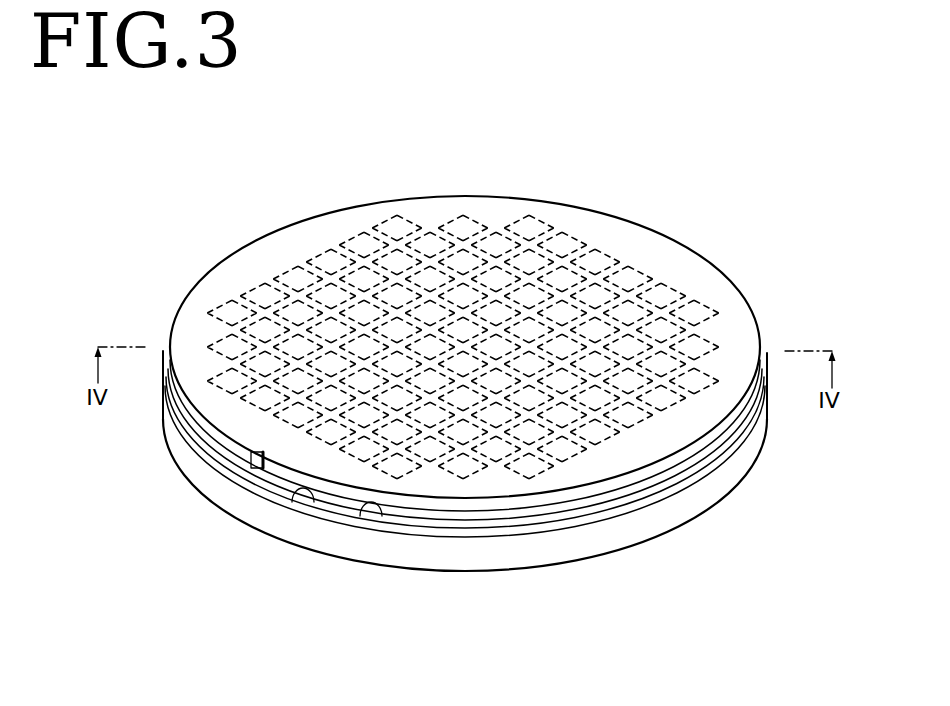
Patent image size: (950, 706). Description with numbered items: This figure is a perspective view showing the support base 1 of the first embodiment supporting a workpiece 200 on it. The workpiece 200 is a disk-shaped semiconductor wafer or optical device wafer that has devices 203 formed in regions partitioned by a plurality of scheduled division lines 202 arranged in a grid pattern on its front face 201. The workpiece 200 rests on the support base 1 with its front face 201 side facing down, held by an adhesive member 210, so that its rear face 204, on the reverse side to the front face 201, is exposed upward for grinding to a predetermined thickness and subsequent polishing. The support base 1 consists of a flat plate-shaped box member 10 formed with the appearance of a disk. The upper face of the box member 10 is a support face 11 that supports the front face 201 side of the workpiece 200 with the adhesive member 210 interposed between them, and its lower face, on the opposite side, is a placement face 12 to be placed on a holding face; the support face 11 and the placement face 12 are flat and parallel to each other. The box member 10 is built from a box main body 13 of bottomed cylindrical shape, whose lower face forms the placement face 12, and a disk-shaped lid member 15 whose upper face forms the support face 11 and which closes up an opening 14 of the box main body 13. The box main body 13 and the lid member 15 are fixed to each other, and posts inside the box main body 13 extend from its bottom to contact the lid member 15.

The support base 1 is at (648, 567).
The box member 10 is at (685, 541).
The support face 11 is at (292, 502).
The placement face 12 is at (463, 572).
The box main body 13 is at (408, 582).
The opening 14 is at (360, 516).
The lid member 15 is at (268, 514).
The workpiece 200 is at (736, 265).
The front face 201 is at (692, 463).
The scheduled division lines 202 is at (673, 307).
The devices 203 is at (578, 247).
The rear face 204 is at (491, 215).
The adhesive member 210 is at (553, 527).